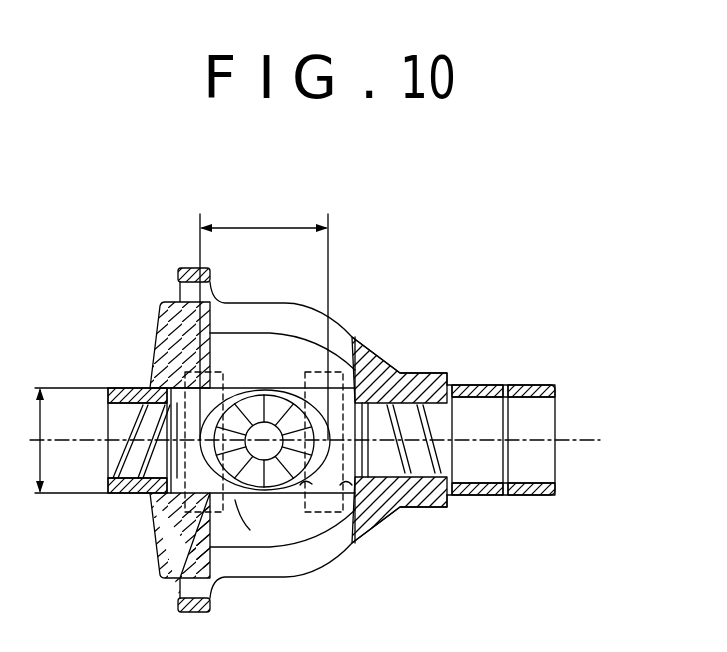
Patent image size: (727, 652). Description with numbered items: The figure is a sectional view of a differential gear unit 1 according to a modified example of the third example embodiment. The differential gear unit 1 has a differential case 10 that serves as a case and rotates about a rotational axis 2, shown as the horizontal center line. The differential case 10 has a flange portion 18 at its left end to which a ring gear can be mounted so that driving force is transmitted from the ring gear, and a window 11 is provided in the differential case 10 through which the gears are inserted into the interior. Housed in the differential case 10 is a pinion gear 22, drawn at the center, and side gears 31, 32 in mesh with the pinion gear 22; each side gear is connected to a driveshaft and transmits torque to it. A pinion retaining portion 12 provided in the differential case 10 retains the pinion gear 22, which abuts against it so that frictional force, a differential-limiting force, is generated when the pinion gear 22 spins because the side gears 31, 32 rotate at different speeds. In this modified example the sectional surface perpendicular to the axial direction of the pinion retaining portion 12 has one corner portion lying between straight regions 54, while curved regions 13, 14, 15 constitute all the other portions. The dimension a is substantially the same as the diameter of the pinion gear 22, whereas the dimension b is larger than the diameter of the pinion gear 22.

The differential gear unit 1 is at (490, 225).
The rotational axis 2 is at (575, 440).
The differential case 10 is at (373, 357).
The window 11 is at (343, 330).
The pinion retaining portion 12 is at (285, 497).
The curved region 13 is at (278, 400).
The curved region 14 is at (176, 433).
The curved region 15 is at (255, 510).
The flange portion 18 is at (177, 268).
The pinion gear 22 is at (258, 400).
The side gear 31 is at (312, 370).
The side gear 32 is at (160, 495).
The straight region 54 is at (332, 505).
The dimension a is at (30, 440).
The dimension b is at (264, 319).